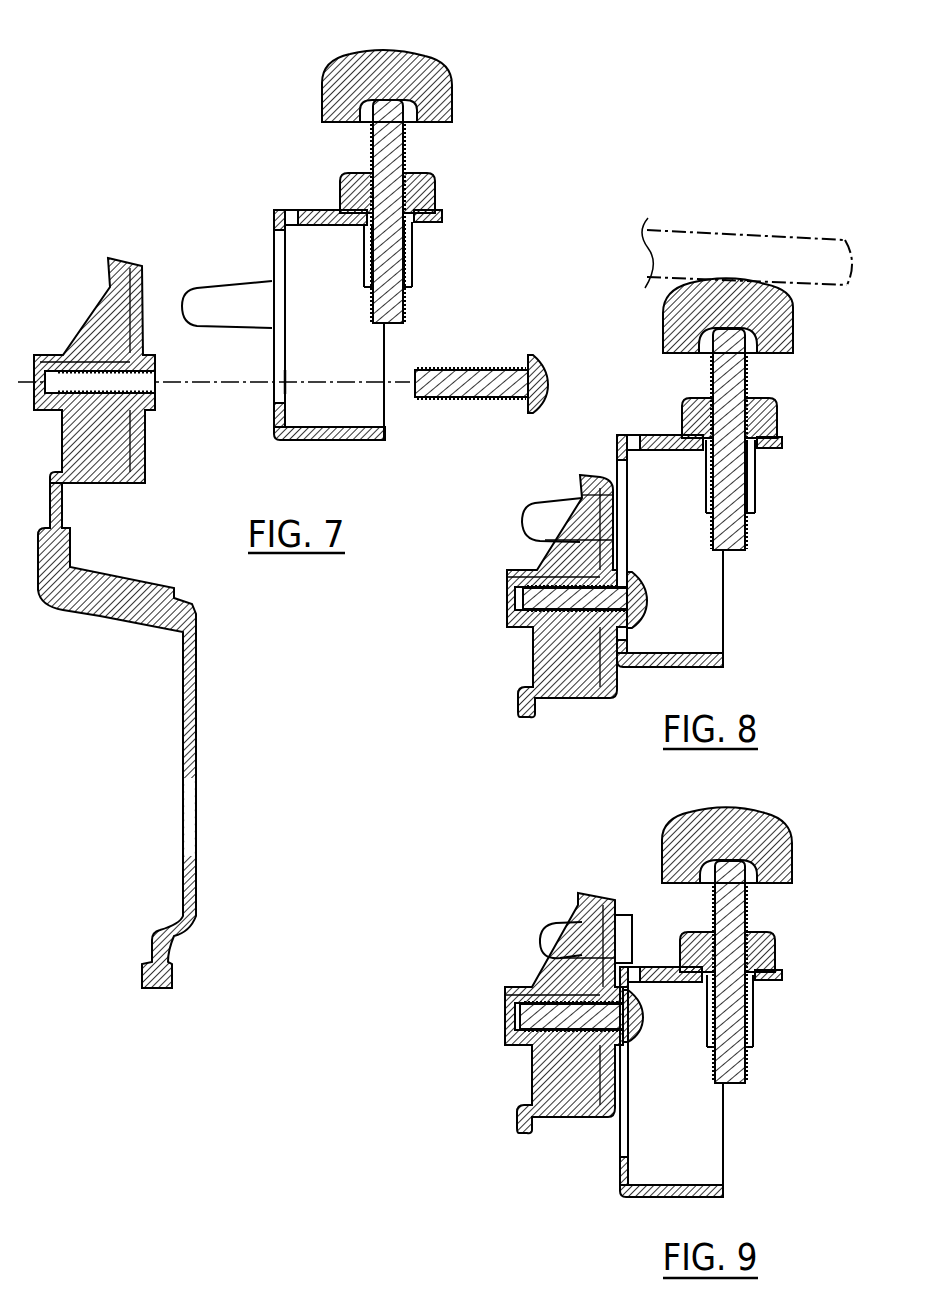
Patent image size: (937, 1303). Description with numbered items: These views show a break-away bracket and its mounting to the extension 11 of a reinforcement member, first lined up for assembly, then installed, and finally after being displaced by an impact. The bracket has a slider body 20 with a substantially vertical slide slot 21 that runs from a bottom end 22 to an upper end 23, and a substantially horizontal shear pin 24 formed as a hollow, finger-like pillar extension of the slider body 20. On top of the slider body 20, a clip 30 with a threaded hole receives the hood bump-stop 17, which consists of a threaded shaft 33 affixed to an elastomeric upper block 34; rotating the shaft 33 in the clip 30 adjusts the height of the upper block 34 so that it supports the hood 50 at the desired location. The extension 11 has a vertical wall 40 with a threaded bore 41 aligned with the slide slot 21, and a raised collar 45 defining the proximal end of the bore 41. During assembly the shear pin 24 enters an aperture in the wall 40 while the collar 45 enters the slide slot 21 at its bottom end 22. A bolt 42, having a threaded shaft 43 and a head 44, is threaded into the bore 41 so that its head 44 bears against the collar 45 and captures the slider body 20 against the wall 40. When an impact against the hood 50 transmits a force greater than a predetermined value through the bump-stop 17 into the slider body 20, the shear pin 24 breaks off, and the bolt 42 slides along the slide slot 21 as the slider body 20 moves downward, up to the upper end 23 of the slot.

In FIG. 7, the extension 11 is at (126, 622).
In FIG. 8, the extension 11 is at (535, 657).
In FIG. 8, the hood bump-stop 17 is at (794, 324).
In FIG. 9, the hood bump-stop 17 is at (795, 845).
In FIG. 7, the slider body 20 is at (337, 437).
In FIG. 8, the slider body 20 is at (690, 653).
In FIG. 9, the slider body 20 is at (687, 1185).
In FIG. 7, the slide slot 21 is at (280, 361).
In FIG. 9, the slide slot 21 is at (623, 1140).
In FIG. 7, the bottom end 22 is at (287, 388).
In FIG. 7, the upper end 23 is at (281, 240).
In FIG. 7, the shear pin 24 is at (253, 286).
In FIG. 8, the shear pin 24 is at (523, 530).
In FIG. 9, the shear pin 24 is at (550, 921).
In FIG. 7, the clip 30 is at (433, 180).
In FIG. 7, the threaded shaft 33 is at (372, 152).
In FIG. 7, the elastomeric upper block 34 is at (452, 83).
In FIG. 7, the vertical wall 40 is at (147, 290).
In FIG. 7, the bore 41 is at (152, 383).
In FIG. 7, the bolt 42 is at (499, 390).
In FIG. 7, the threaded shaft 43 is at (480, 370).
In FIG. 7, the head 44 is at (548, 378).
In FIG. 8, the head 44 is at (644, 607).
In FIG. 9, the head 44 is at (626, 1032).
In FIG. 7, the raised collar 45 is at (150, 407).
In FIG. 8, the hood 50 is at (678, 228).